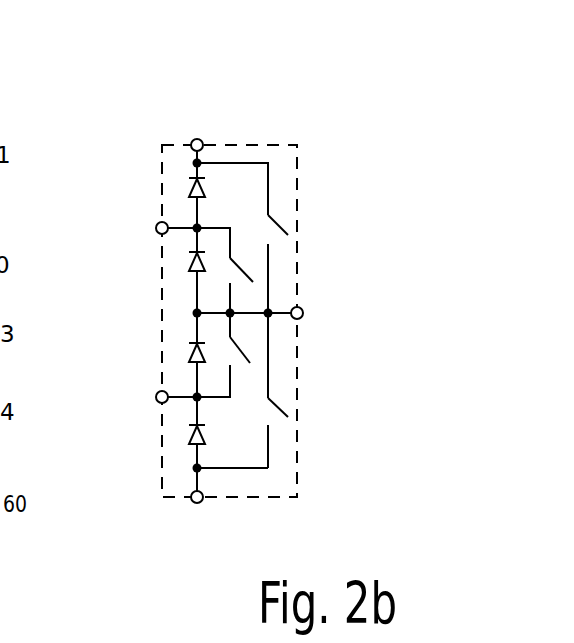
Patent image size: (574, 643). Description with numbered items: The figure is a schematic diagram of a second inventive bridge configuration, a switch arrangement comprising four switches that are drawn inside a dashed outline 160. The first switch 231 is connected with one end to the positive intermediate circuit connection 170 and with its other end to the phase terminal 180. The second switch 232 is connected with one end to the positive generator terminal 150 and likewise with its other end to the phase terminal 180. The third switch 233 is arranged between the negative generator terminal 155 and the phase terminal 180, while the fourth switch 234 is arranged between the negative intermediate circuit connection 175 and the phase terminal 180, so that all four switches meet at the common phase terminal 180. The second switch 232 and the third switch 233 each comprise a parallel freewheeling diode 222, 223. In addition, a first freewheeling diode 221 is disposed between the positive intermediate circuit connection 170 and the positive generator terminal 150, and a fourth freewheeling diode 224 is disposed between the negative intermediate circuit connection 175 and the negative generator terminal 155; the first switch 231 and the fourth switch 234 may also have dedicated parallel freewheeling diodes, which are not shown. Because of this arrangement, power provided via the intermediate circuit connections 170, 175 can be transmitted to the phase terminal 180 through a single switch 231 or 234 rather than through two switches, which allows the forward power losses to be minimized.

The positive generator terminal 150 is at (156, 227).
The negative generator terminal 155 is at (156, 396).
The switching circuit block 160 is at (298, 452).
The positive intermediate circuit connection 170 is at (201, 141).
The negative intermediate circuit connection 175 is at (195, 503).
The phase terminal 180 is at (303, 313).
The first freewheeling diode 221 is at (190, 188).
The freewheeling diode 222 is at (190, 266).
The freewheeling diode 223 is at (190, 358).
The fourth freewheeling diode 224 is at (190, 443).
The first switch 231 is at (280, 220).
The second switch 232 is at (240, 270).
The third switch 233 is at (243, 348).
The fourth switch 234 is at (280, 405).